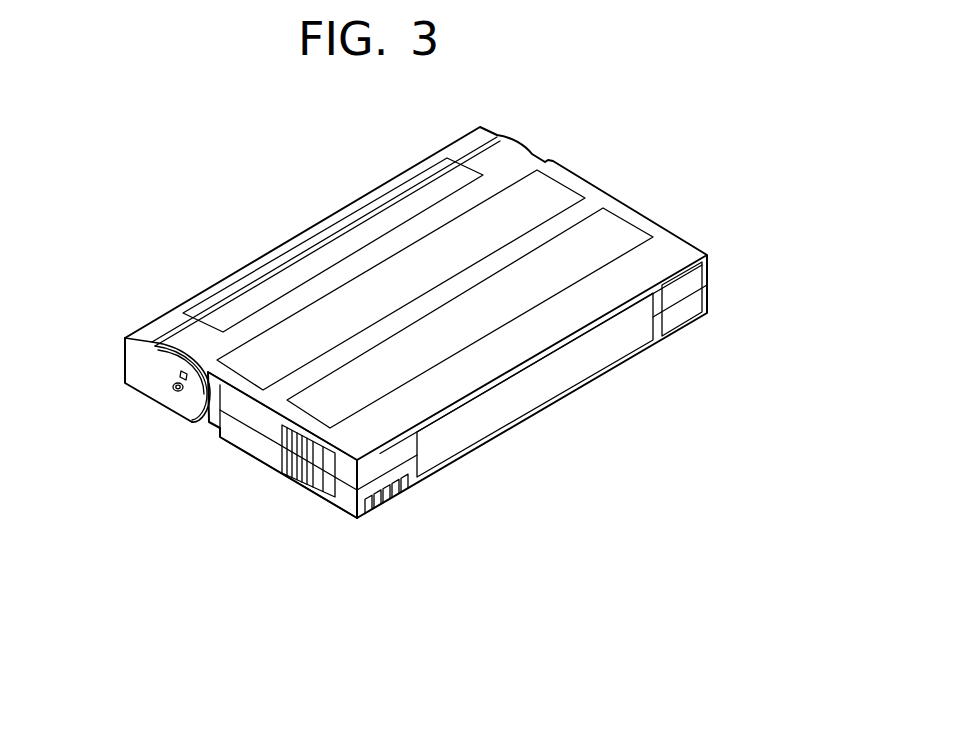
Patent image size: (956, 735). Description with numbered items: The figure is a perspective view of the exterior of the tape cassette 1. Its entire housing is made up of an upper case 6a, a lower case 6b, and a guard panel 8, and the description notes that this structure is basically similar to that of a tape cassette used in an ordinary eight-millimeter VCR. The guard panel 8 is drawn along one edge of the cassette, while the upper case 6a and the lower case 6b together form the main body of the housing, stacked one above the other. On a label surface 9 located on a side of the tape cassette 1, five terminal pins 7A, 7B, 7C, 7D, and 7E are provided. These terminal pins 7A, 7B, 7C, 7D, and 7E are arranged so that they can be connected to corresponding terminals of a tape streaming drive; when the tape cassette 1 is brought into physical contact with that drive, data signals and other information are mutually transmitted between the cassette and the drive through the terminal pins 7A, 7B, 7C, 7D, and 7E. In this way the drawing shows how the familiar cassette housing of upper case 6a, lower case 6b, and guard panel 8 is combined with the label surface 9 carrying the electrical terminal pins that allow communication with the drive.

The tape cassette 1 is at (246, 236).
The guard panel 8 is at (153, 330).
The upper case 6a is at (233, 405).
The lower case 6b is at (263, 453).
The label surface 9 is at (570, 380).
The terminal pin 7A is at (370, 510).
The terminal pin 7B is at (377, 508).
The terminal pin 7C is at (382, 508).
The terminal pin 7D is at (397, 500).
The terminal pin 7E is at (403, 498).